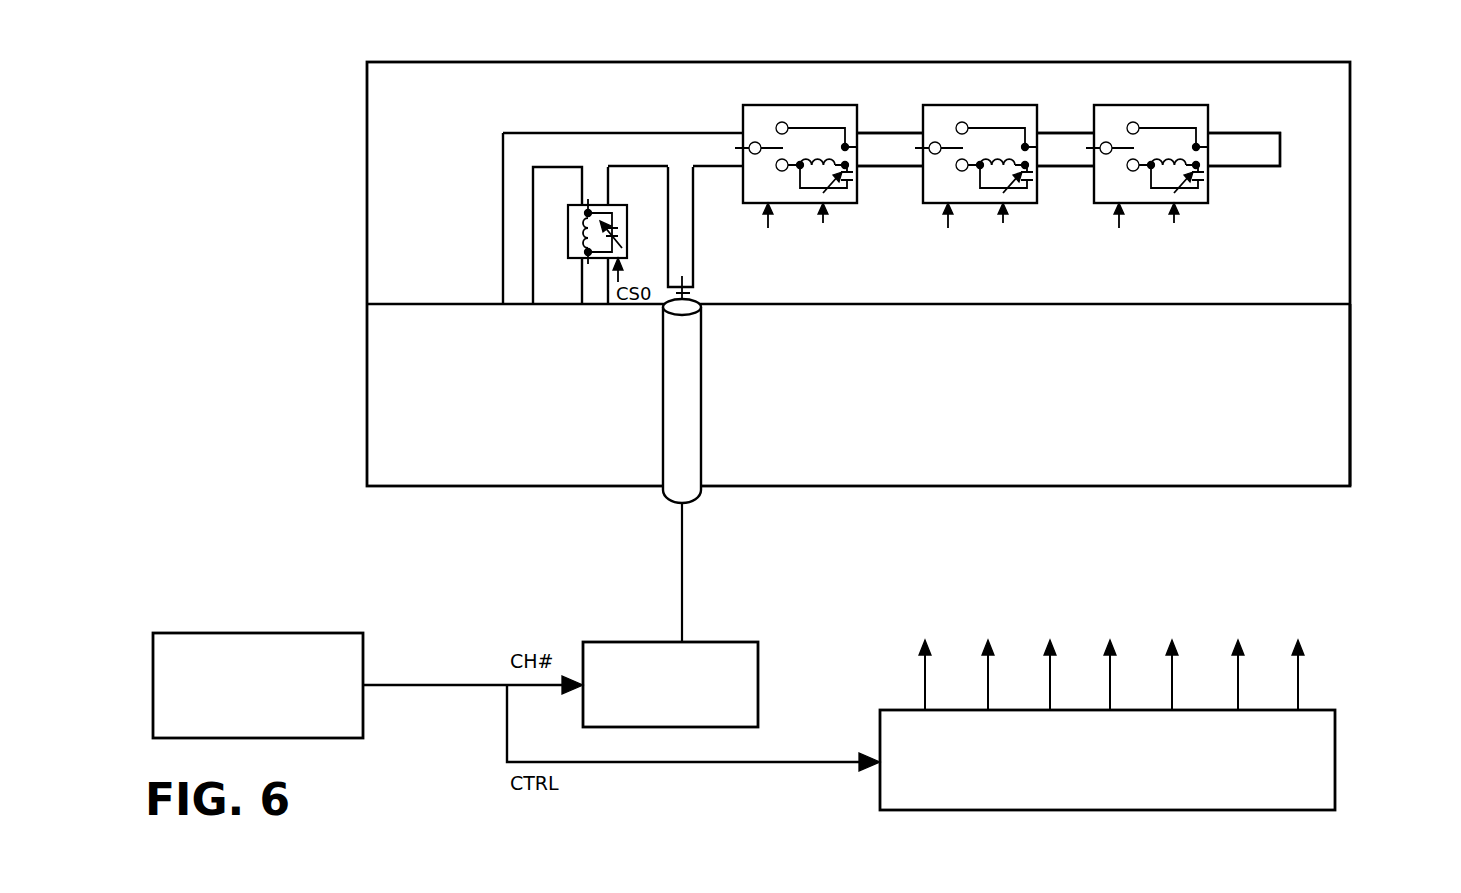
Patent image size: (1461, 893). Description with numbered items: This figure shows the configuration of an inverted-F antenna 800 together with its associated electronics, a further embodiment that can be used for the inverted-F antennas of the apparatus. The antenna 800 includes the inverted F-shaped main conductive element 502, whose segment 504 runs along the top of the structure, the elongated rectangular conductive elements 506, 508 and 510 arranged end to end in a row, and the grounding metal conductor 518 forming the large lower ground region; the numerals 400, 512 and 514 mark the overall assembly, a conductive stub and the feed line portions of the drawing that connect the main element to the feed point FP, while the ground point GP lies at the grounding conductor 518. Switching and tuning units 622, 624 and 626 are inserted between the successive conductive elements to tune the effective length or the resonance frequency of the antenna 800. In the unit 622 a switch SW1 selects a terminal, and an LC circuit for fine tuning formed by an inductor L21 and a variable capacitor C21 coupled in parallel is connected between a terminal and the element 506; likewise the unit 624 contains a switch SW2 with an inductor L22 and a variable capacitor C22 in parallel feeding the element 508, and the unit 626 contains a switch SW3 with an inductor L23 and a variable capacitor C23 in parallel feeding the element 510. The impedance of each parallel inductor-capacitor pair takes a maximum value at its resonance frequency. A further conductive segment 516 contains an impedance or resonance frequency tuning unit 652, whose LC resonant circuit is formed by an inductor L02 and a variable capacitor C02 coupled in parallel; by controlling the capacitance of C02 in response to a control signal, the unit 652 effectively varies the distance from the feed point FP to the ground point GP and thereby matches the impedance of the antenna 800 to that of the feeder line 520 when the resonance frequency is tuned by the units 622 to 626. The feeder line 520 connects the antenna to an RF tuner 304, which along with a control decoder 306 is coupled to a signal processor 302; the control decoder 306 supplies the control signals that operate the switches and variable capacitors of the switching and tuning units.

The antenna assembly 400 is at (1350, 130).
The inverted F-shaped main conductive element 502 is at (517, 133).
The segment 504 is at (585, 145).
The elongated rectangular conductive element 506 is at (883, 133).
The elongated rectangular conductive element 508 is at (1063, 130).
The elongated rectangular conductive element 510 is at (1258, 135).
The conductive stub 512 is at (518, 190).
The feed line 514 is at (682, 240).
The further conductive segment 516 is at (580, 287).
The grounding metal conductor 518 is at (1340, 466).
The feeder line 520 is at (690, 500).
The switching and tuning unit 622 is at (806, 105).
The switching and tuning unit 624 is at (991, 105).
The switching and tuning unit 626 is at (1183, 103).
The impedance or resonance frequency tuning unit 652 is at (542, 234).
The inverted-F antenna 800 is at (661, 106).
The signal processor 302 is at (258, 685).
The RF tuner 304 is at (670, 684).
The control decoder 306 is at (1107, 715).
The switch SW1 is at (814, 169).
The switch SW2 is at (996, 169).
The switch SW3 is at (1167, 169).
The inductor L02 is at (576, 239).
The variable capacitor C02 is at (640, 206).
The inductor L21 is at (839, 171).
The inductor L22 is at (1019, 171).
The inductor L23 is at (1190, 171).
The variable capacitor C21 is at (830, 197).
The variable capacitor C22 is at (1010, 197).
The variable capacitor C23 is at (1181, 197).
The ground point GP is at (520, 303).
The feed point FP is at (696, 288).